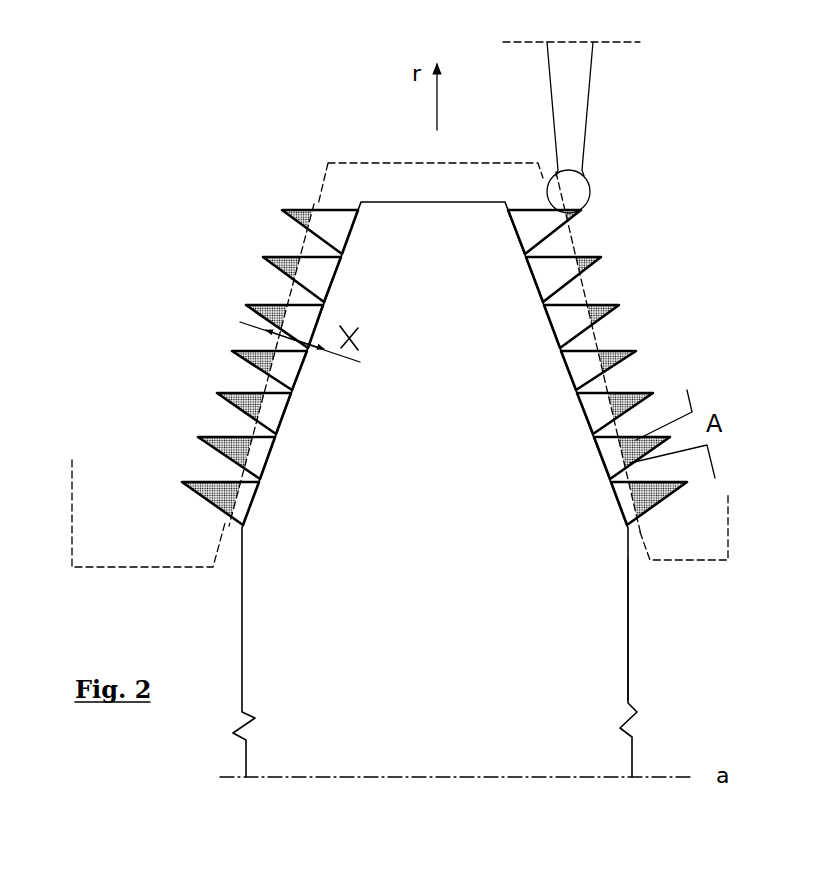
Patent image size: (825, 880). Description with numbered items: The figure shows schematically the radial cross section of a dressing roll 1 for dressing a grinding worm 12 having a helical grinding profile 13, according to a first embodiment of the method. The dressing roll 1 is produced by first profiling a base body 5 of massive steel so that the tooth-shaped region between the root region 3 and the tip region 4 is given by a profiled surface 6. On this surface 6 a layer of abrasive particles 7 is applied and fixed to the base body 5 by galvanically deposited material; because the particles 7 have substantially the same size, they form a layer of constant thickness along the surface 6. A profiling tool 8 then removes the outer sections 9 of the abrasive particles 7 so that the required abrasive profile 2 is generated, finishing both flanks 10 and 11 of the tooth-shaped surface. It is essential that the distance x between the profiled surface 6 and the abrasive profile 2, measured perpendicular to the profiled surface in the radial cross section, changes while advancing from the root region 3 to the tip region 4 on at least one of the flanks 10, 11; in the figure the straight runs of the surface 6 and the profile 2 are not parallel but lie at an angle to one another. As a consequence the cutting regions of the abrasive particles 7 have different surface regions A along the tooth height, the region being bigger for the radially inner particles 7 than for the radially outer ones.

The dressing roll 1 is at (446, 456).
The abrasive profile 2 is at (284, 297).
The root region 3 is at (666, 524).
The tip region 4 is at (613, 199).
The base body 5 is at (629, 634).
The profiled surface 6 is at (290, 375).
The abrasive particles 7 is at (590, 420).
The profiling tool 8 is at (576, 190).
The outer sections 9 is at (197, 480).
The flank 10 is at (250, 238).
The flank 11 is at (662, 266).
The grinding worm 12 is at (122, 572).
The helical grinding profile 13 is at (332, 196).